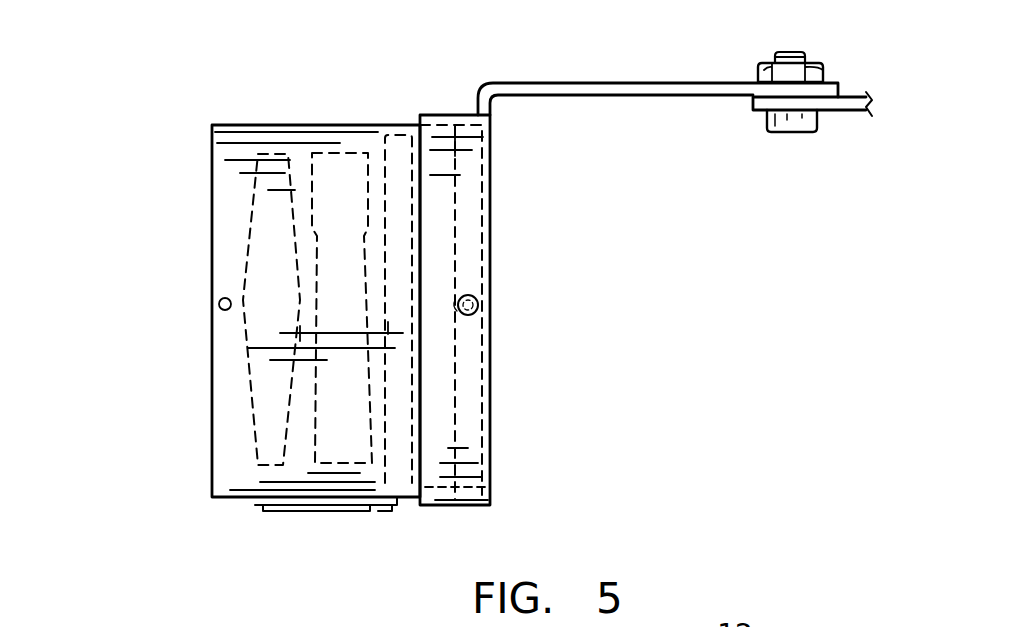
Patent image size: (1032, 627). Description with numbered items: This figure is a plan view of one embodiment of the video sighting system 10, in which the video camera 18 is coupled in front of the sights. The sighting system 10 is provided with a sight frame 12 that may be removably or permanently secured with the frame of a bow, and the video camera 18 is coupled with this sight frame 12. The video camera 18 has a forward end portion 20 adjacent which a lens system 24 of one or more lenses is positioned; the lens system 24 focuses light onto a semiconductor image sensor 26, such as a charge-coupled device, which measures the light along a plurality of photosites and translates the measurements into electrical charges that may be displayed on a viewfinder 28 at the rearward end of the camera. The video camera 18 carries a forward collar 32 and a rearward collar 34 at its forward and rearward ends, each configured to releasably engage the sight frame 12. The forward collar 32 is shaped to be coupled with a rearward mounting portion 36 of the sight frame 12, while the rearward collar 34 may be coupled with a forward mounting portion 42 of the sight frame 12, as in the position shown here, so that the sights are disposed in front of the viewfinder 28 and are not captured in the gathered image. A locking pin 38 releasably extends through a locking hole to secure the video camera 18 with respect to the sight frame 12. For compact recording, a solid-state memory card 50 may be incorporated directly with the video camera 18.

The sighting system 10 is at (158, 140).
The sight frame 12 is at (565, 95).
The video camera 18 is at (300, 148).
The forward end portion 20 is at (210, 128).
The lens system 24 is at (267, 382).
The semiconductor image sensor 26 is at (343, 445).
The viewfinder 28 is at (403, 437).
The forward collar 32 is at (225, 167).
The rearward collar 34 is at (467, 373).
The rearward mounting portion 36 is at (492, 316).
The locking pin 38 is at (212, 302).
The forward mounting portion 42 is at (420, 148).
The solid-state memory card 50 is at (340, 508).